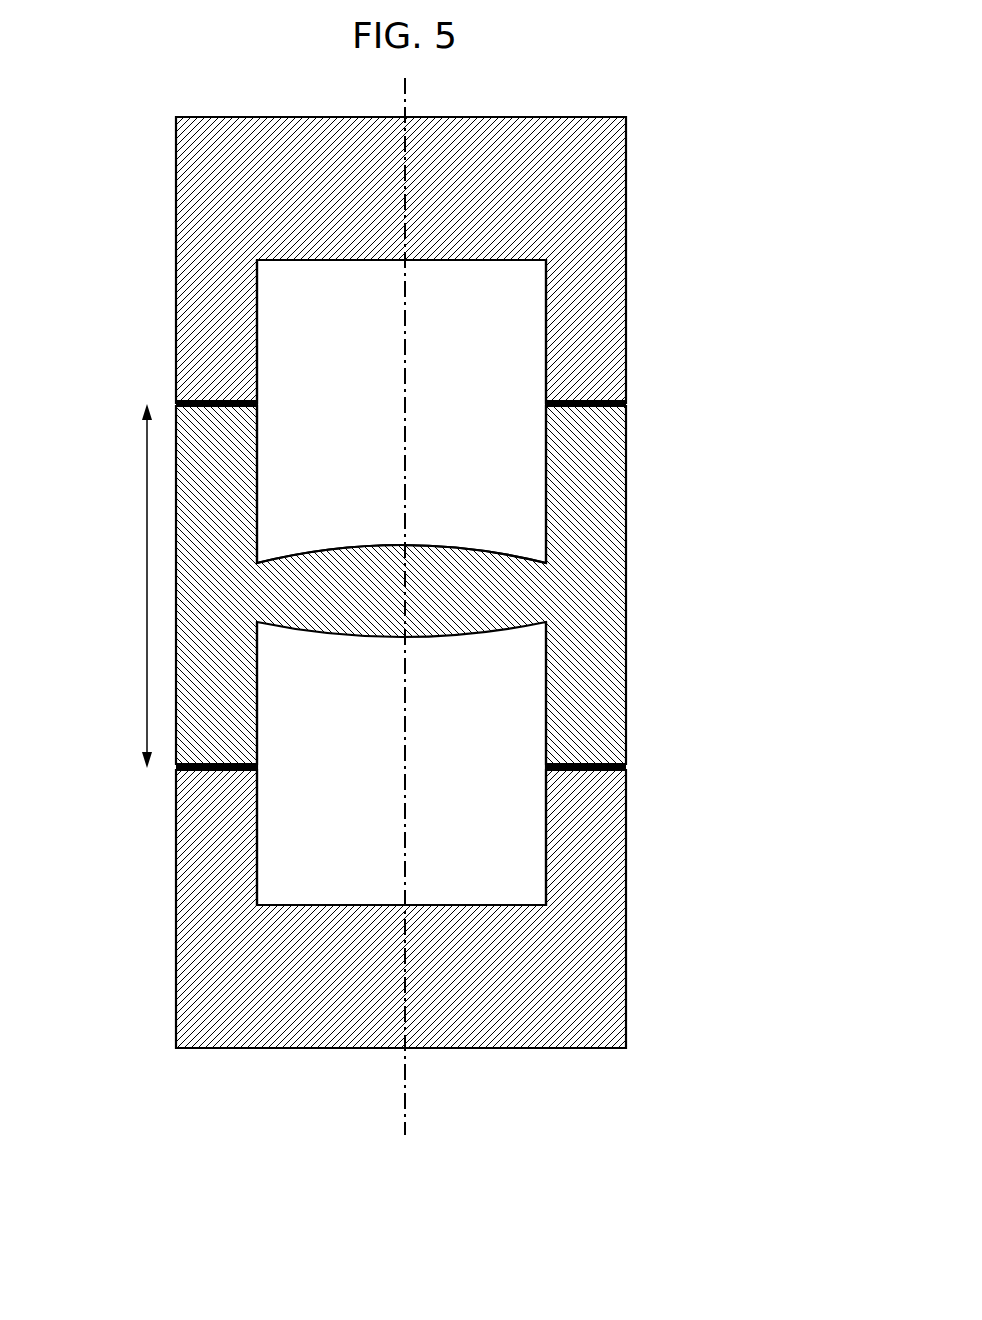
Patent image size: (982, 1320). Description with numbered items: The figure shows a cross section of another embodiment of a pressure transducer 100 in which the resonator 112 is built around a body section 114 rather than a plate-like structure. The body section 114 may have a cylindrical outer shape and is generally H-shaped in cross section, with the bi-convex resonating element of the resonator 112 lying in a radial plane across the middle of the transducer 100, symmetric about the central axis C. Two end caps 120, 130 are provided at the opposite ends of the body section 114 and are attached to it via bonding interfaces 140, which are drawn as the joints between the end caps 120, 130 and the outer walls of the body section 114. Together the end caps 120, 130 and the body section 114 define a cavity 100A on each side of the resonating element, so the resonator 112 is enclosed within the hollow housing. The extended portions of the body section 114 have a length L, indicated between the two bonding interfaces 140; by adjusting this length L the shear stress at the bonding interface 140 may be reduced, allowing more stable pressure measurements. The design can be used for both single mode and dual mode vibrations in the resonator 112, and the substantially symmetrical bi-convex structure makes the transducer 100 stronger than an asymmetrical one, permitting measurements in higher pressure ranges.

The pressure transducer 100 is at (457, 582).
The cavity 100A is at (296, 329).
The resonator 112 is at (435, 565).
The body section 114 is at (636, 604).
The end cap 120 is at (626, 182).
The end cap 130 is at (626, 990).
The bonding interface 140 is at (205, 401).
The C axis C is at (405, 1098).
The length L is at (129, 586).